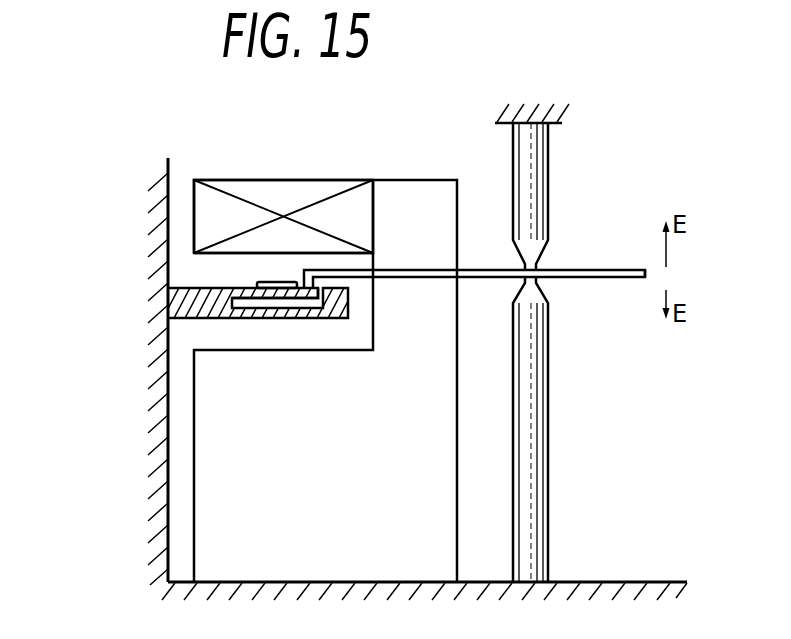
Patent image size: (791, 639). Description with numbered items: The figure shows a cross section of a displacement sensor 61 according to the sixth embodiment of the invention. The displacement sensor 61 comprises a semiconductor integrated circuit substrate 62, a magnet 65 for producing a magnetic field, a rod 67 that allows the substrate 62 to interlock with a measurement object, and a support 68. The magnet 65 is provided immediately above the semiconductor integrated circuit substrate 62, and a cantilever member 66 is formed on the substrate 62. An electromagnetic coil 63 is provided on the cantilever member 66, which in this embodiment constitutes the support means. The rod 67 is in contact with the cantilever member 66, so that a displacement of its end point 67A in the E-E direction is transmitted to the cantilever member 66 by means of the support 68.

The displacement sensor 61 is at (96, 181).
The semiconductor integrated circuit substrate 62 is at (203, 320).
The electromagnetic coil 63 is at (283, 280).
The magnet 65 is at (240, 183).
The cantilever member 66 is at (240, 287).
The rod 67 is at (598, 280).
The end point 67A is at (643, 280).
The support 68 is at (542, 267).